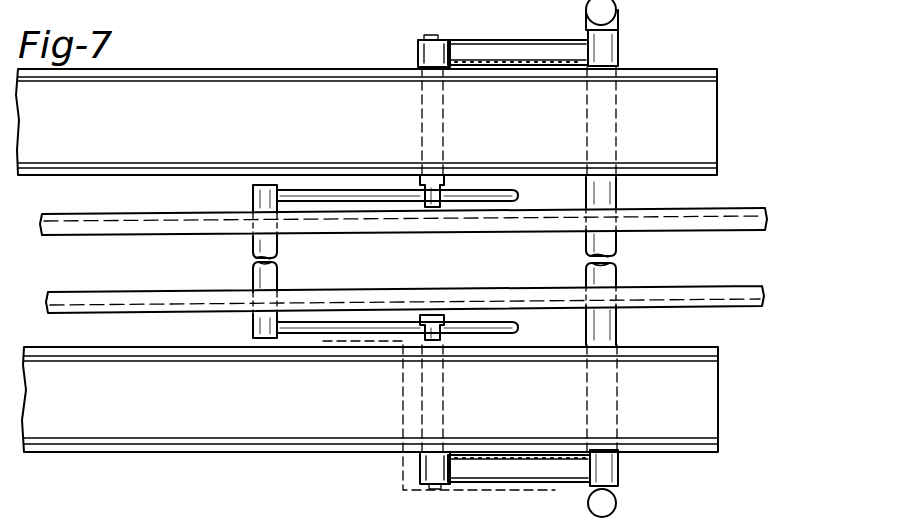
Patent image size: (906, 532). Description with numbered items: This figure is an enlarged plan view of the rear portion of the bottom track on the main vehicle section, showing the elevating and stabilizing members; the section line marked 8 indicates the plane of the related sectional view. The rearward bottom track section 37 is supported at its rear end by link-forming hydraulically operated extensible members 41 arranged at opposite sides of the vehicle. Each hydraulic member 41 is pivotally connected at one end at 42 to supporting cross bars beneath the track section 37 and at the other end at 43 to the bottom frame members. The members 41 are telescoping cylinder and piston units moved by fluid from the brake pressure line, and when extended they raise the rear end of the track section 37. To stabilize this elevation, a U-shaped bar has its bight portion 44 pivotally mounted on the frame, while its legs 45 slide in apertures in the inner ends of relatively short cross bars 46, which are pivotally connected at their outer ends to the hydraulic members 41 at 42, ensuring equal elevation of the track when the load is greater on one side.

The rearward bottom track section 37 is at (708, 112).
The hydraulically operated extensible members 41 is at (543, 22).
The pivotal connection to supporting cross bars 42 is at (418, 52).
The pivotal connection to bottom frame members 43 is at (567, 505).
The bight portion of U-shaped stabilizer bar 44 is at (277, 272).
The legs of the stabilizer bar 45 is at (357, 190).
The short cross bars 46 is at (432, 315).
The section line 8- 8 is at (243, 341).